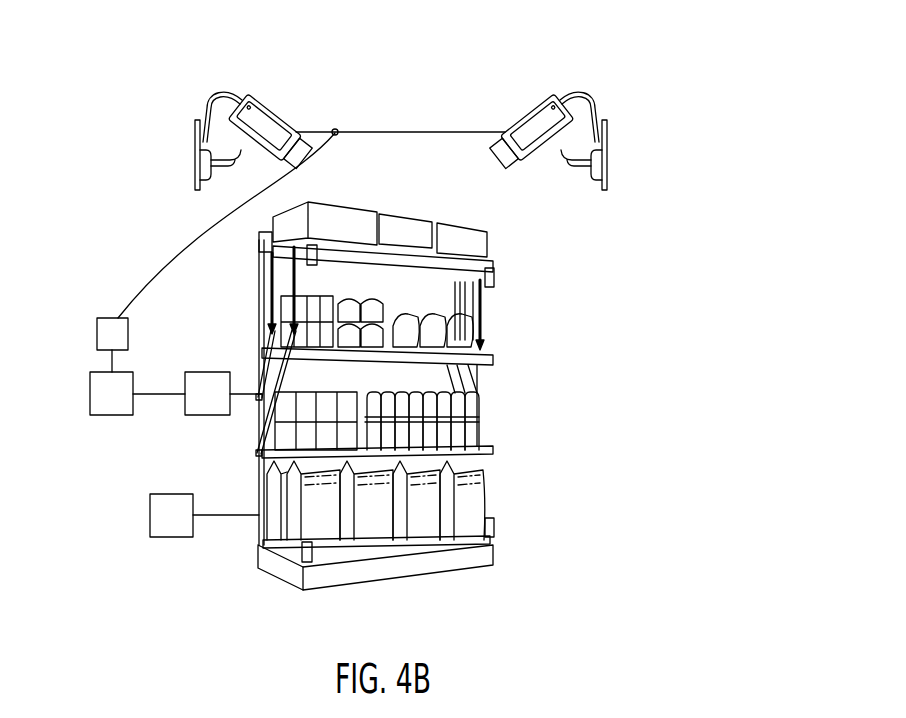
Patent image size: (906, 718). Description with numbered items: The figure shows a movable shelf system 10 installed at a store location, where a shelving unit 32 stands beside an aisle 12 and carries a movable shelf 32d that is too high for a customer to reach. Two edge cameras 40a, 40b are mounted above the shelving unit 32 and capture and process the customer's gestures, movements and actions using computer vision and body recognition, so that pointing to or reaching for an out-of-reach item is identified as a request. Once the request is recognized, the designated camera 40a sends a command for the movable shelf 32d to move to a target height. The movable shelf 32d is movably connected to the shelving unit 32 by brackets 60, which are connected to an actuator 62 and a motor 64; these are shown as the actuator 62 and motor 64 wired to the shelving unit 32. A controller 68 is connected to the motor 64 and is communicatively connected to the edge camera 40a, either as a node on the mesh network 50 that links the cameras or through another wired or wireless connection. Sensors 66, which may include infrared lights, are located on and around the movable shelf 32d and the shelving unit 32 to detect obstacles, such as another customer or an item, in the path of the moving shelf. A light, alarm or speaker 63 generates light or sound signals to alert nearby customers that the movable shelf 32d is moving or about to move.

The movable shelf system 10 is at (568, 40).
The aisle 12 is at (477, 601).
The shelving unit 32 is at (402, 602).
The movable shelf 32d is at (494, 258).
The edge camera 40a is at (277, 120).
The edge camera 40b is at (548, 106).
The mesh network 50 is at (338, 129).
The brackets 60 is at (300, 322).
The actuator 62 is at (210, 415).
The light, alarm or speaker 63 is at (204, 515).
The motor 64 is at (108, 415).
The sensors 66 is at (310, 253).
The controller 68 is at (113, 318).